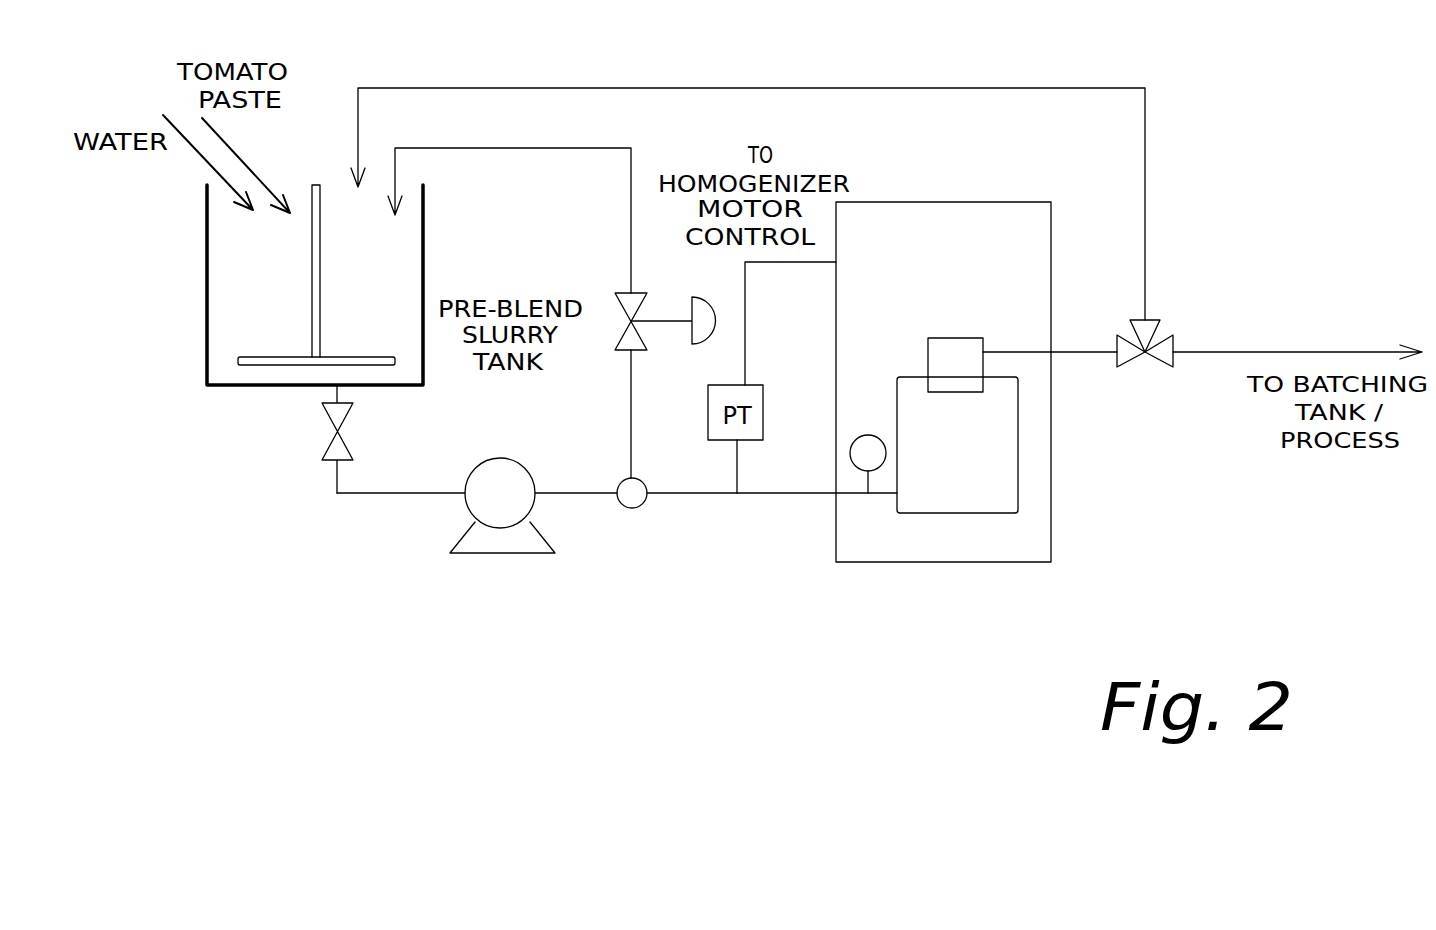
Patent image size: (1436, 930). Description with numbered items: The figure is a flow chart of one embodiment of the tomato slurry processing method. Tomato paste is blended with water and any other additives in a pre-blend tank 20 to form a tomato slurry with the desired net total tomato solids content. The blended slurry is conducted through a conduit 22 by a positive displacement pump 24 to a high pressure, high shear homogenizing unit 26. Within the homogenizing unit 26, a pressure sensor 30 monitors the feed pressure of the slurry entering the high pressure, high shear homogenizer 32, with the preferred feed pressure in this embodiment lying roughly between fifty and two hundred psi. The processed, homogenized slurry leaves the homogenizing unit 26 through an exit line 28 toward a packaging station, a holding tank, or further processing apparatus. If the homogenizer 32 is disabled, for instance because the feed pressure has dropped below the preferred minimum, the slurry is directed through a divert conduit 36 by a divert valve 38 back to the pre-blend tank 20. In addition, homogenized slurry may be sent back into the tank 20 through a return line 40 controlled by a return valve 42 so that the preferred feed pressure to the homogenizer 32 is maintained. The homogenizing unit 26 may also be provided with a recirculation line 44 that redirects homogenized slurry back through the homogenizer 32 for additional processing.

The pre-blend tank 20 is at (207, 268).
The conduit 22 is at (397, 493).
The positive displacement pump 24 is at (517, 553).
The high pressure, high shear homogenizing unit 26 is at (883, 562).
The exit line 28 is at (1228, 352).
The pressure sensor 30 is at (868, 434).
The high pressure, high shear homogenizer 32 is at (963, 392).
The divert conduit 36 is at (630, 228).
The divert valve 38 is at (631, 322).
The return line 40 is at (805, 88).
The return valve 42 is at (1145, 352).
The recirculation line 44 is at (980, 513).